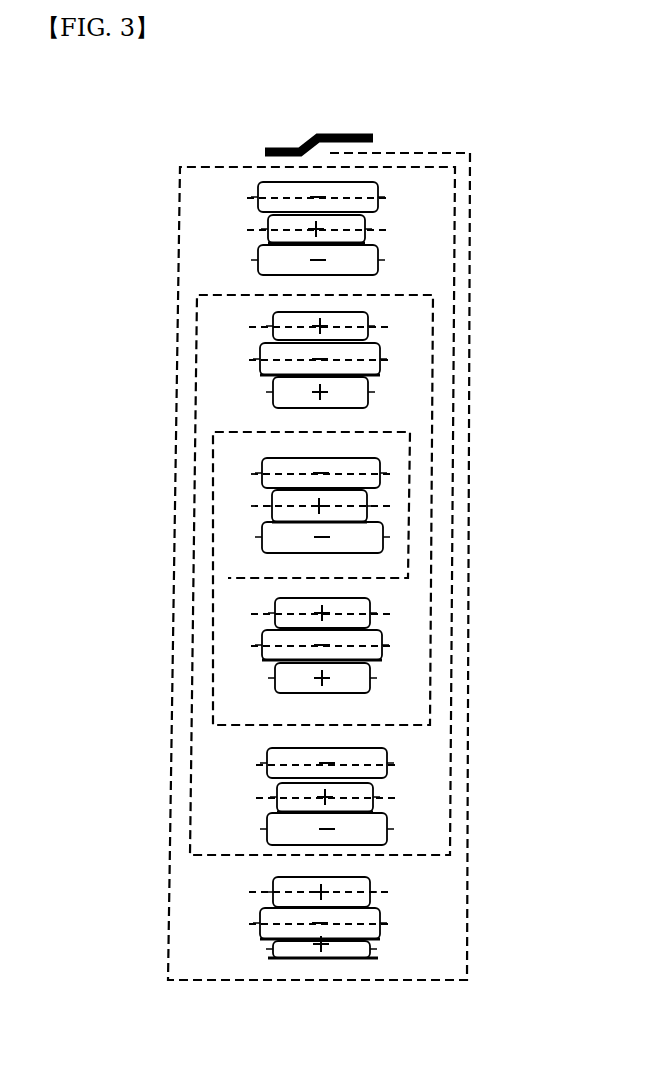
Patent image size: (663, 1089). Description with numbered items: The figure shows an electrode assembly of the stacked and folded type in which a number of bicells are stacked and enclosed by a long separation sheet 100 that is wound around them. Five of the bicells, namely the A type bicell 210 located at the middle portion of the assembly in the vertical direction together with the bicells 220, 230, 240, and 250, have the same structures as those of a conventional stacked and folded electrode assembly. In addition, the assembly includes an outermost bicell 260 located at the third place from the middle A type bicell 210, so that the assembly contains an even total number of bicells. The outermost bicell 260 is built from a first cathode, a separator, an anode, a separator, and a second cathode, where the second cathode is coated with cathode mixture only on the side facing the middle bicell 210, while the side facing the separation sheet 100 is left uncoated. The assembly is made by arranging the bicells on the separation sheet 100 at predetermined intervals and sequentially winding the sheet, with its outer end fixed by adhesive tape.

The separation sheet 100 is at (176, 353).
The A type bicell 210 is at (395, 502).
The bicell 220 is at (393, 637).
The bicell 230 is at (396, 355).
The bicell 240 is at (398, 798).
The bicell 250 is at (396, 227).
The outermost bicell 260 is at (396, 917).